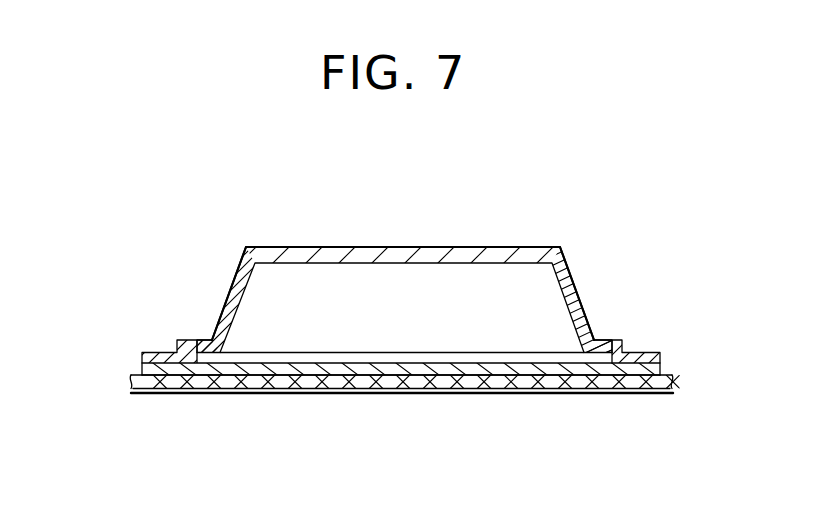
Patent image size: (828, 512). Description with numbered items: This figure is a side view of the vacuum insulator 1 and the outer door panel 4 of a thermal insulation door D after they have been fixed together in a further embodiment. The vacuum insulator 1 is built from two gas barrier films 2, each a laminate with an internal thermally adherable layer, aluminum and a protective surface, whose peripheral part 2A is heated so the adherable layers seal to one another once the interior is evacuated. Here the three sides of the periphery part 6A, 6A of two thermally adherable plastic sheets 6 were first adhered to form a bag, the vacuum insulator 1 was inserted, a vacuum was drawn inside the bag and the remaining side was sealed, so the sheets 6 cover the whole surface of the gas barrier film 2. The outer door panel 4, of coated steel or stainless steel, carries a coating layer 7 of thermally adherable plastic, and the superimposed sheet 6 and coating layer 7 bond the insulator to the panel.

The thermal insulation door D is at (311, 220).
The vacuum insulator 1 is at (462, 258).
The gas barrier film 2 is at (332, 280).
The peripheral part of gas barrier films 2A is at (212, 338).
The outer door panel 4 is at (302, 396).
The thermally adherable plastic sheet 6 is at (390, 250).
The periphery part of thermally adherable plastic sheets 6A is at (158, 350).
The coating layer 7 is at (391, 383).